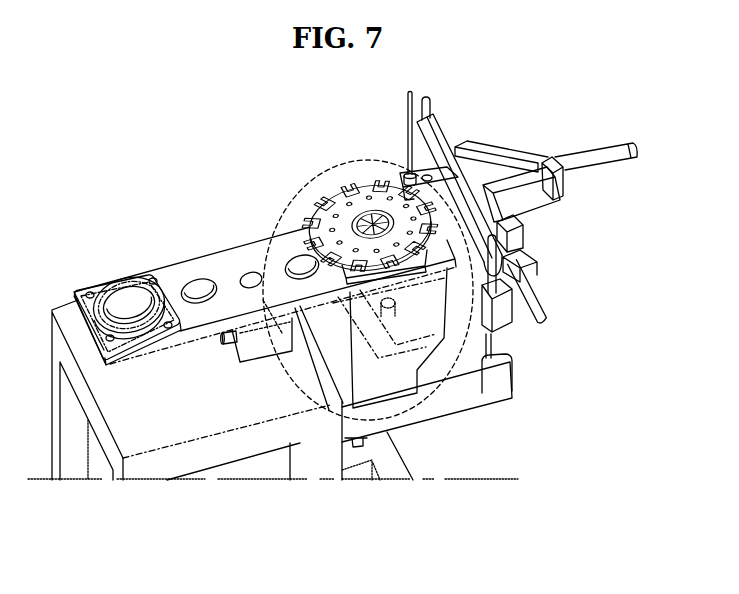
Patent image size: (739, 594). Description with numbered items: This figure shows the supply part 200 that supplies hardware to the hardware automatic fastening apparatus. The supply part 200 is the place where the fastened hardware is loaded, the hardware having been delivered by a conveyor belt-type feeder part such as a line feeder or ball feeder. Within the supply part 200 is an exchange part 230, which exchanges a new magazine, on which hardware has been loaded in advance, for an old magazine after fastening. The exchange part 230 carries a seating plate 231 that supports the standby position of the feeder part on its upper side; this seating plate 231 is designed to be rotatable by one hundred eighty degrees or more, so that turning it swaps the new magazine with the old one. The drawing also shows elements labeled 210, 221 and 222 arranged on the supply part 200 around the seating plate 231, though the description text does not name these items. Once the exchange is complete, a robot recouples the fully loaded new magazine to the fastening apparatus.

The supply part 200 is at (76, 110).
The transfer unit 210 is at (500, 162).
The tool magazine disk 221 is at (313, 172).
The lifting unit 222 is at (453, 344).
The exchange part 230 is at (241, 368).
The seating plate 231 is at (226, 270).